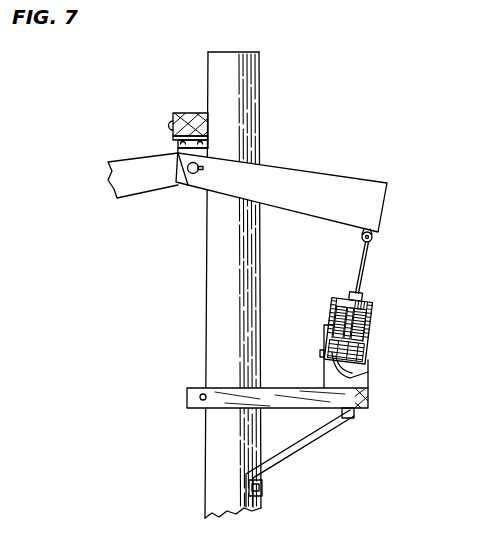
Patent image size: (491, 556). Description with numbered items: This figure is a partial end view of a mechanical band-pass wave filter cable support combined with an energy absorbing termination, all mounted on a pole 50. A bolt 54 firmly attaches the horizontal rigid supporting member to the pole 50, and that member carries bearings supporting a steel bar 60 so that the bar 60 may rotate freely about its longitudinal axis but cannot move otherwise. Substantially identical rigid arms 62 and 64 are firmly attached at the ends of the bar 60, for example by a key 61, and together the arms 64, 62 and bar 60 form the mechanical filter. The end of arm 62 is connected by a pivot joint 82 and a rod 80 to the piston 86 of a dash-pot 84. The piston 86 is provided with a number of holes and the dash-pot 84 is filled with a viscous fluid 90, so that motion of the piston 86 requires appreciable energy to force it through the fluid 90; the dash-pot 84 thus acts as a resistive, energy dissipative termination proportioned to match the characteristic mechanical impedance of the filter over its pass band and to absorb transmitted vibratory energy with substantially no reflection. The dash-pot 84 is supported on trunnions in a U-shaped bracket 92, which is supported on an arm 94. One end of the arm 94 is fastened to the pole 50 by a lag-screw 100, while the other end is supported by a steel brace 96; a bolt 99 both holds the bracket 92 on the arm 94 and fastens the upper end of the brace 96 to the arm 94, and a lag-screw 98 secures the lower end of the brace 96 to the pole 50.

The pole 50 is at (207, 298).
The bolt 54 is at (173, 126).
The steel bar 60 is at (187, 165).
The key 61 is at (200, 163).
The rigid arm 62 is at (310, 181).
The rigid arm 64 is at (136, 191).
The rod 80 is at (359, 266).
The pivot joint 82 is at (378, 237).
The dash-pot 84 is at (373, 304).
The piston 86 is at (336, 318).
The viscous fluid 90 is at (370, 351).
The U-shaped bracket 92 is at (368, 381).
The arm 94 is at (283, 392).
The steel brace 96 is at (307, 438).
The lag-screw 98 is at (263, 491).
The bolt 99 is at (353, 419).
The lag-screw 100 is at (200, 399).